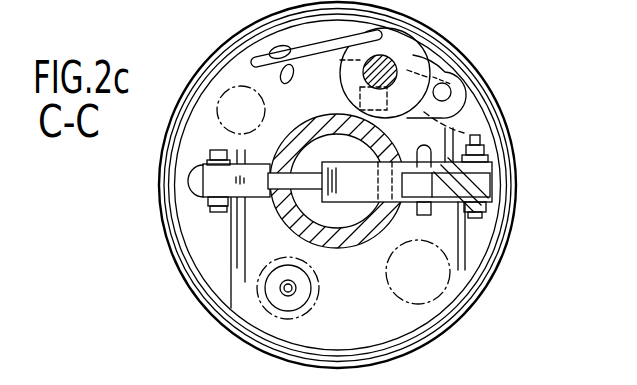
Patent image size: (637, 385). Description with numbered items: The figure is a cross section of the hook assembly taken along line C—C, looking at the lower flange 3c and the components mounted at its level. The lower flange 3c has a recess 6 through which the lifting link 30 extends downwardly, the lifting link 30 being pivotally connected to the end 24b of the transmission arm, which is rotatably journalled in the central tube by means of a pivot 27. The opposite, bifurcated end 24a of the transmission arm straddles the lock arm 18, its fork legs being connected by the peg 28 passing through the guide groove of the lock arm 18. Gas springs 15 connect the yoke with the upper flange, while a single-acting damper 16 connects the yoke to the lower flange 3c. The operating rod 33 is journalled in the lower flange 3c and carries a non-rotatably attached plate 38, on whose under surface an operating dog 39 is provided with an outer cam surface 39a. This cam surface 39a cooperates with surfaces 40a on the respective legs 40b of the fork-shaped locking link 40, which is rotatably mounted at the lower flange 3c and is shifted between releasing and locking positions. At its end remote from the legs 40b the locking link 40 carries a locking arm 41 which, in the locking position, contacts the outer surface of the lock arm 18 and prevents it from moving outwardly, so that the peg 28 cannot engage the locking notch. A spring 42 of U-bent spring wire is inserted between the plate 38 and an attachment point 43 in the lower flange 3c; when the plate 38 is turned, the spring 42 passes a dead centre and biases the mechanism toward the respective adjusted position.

The lower flange 3c is at (454, 321).
The gas springs 15 is at (236, 106).
The single-acting damper 16 is at (272, 291).
The recess 6 is at (212, 165).
The lifting link 30 is at (205, 200).
The end of the transmission arm 24b is at (212, 180).
The peg 28 is at (490, 188).
The pivot 27 is at (413, 215).
The lock arm 18 is at (488, 214).
The end of the transmission arm 24a is at (484, 212).
The locking arm 41 is at (481, 128).
The outer cam surface 39a is at (522, 163).
The plate 38 is at (405, 45).
The operating rod 33 is at (342, 75).
The locking link 40 is at (457, 90).
The surfaces 40a is at (400, 62).
The legs 40b is at (433, 77).
The operating dog 39 is at (444, 107).
The spring 42 is at (386, 27).
The attachment point 43 is at (255, 62).